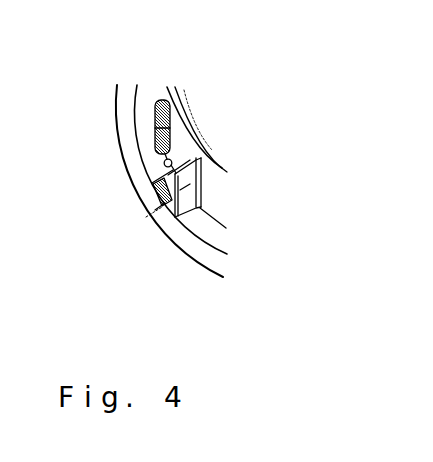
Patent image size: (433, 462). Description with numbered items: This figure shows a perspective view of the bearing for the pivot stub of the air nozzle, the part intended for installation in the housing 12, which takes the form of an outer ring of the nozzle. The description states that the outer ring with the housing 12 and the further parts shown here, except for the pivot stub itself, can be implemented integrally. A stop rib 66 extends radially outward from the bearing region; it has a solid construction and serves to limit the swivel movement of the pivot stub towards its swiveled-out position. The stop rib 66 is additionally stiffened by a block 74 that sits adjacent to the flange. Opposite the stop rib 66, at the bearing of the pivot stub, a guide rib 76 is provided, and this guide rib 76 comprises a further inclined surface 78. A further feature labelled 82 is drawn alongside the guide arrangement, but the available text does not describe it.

The housing 12 is at (216, 194).
The guide rail 82 is at (183, 97).
The inclined surface 78 is at (210, 154).
The guide rib 76 is at (160, 188).
The stop rib 66 is at (172, 211).
The block 74 is at (166, 198).